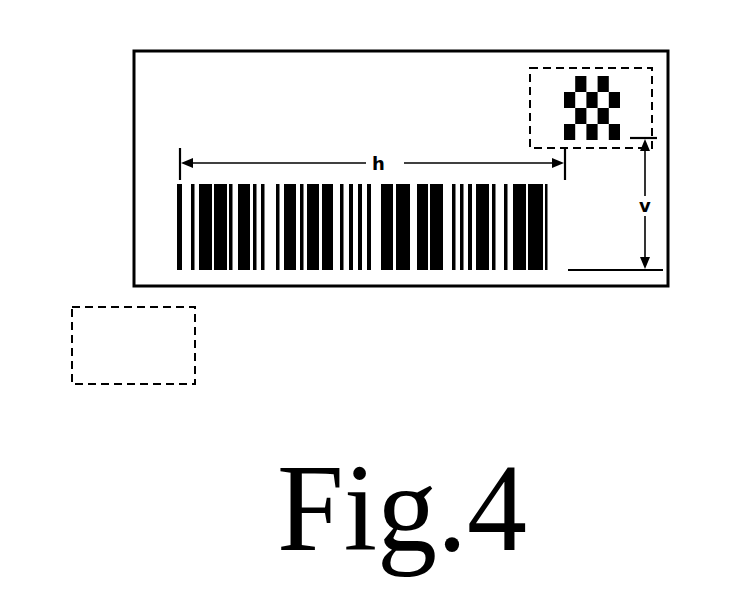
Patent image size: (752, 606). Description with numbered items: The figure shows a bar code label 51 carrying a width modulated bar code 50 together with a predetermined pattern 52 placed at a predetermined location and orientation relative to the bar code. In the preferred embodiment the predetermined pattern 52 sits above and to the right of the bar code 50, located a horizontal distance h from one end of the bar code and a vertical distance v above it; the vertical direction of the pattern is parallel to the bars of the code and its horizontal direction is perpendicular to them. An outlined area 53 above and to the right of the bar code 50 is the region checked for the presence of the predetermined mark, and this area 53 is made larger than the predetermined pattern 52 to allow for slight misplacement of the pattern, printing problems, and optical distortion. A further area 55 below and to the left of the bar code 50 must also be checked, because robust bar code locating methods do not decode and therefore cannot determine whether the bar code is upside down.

The bar code 50 is at (315, 267).
The bar code label 51 is at (272, 83).
The predetermined pattern 52 is at (602, 80).
The outlined area 53 is at (550, 87).
The area below and to the left of the bar code 55 is at (117, 332).